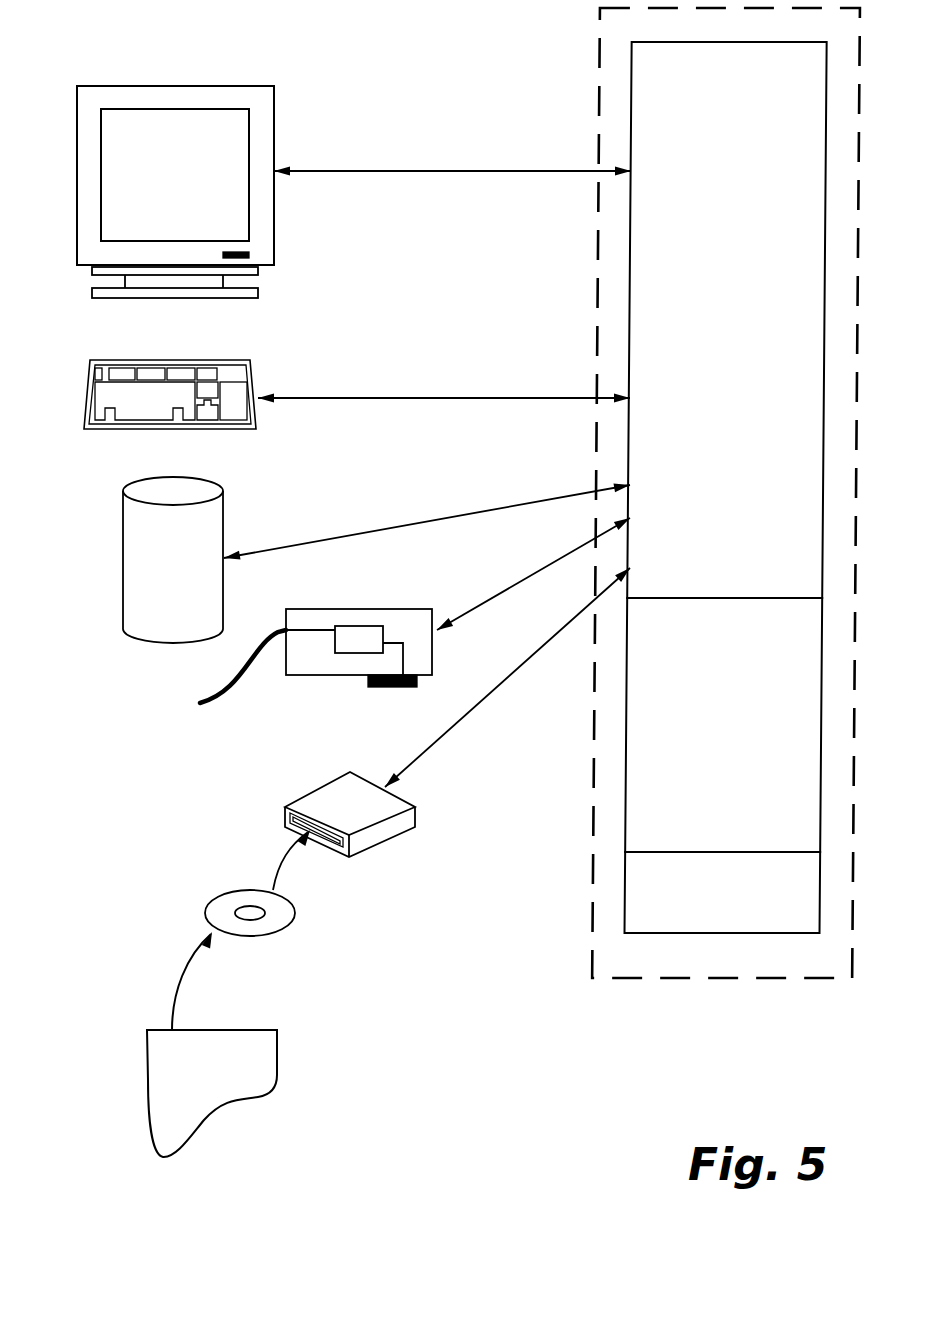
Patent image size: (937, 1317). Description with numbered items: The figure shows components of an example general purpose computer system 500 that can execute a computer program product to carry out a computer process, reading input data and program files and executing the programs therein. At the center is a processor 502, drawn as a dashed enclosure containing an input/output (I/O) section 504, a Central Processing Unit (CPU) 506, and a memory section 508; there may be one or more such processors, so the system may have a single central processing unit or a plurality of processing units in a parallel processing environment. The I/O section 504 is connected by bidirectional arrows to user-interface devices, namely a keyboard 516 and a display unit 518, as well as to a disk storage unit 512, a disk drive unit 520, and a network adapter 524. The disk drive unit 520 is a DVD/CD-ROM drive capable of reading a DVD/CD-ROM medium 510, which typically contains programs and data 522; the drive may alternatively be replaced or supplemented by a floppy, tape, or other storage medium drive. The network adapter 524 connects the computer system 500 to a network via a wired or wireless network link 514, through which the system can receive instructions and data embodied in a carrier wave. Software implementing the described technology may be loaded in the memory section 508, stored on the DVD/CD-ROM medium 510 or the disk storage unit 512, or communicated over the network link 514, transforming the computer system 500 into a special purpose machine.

The computer system 500 is at (553, 1073).
The processor 502 is at (600, 72).
The input/output (I/O) section 504 is at (707, 345).
The central processing unit (CPU) 506 is at (702, 747).
The memory section 508 is at (702, 917).
The DVD/CD-ROM medium 510 is at (222, 893).
The disk storage unit 512 is at (125, 508).
The network link 514 is at (223, 704).
The keyboard 516 is at (128, 357).
The display unit 518 is at (142, 85).
The disk drive unit 520 is at (333, 806).
The programs and data 522 is at (278, 1052).
The network adapter 524 is at (335, 677).